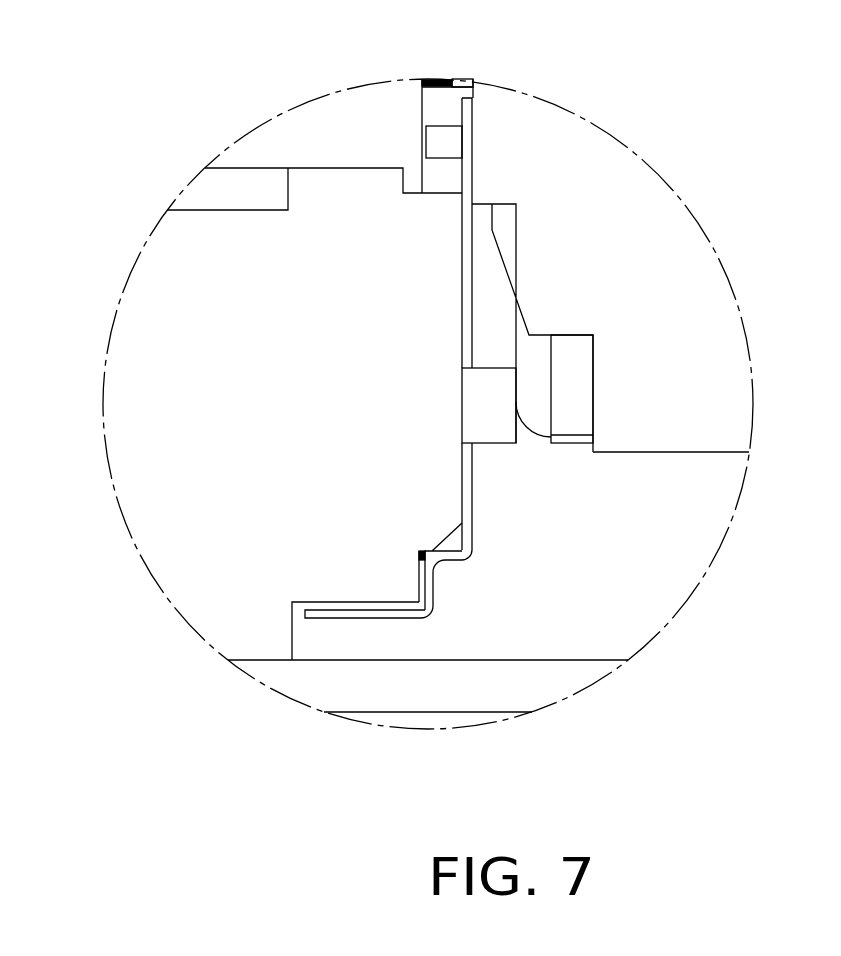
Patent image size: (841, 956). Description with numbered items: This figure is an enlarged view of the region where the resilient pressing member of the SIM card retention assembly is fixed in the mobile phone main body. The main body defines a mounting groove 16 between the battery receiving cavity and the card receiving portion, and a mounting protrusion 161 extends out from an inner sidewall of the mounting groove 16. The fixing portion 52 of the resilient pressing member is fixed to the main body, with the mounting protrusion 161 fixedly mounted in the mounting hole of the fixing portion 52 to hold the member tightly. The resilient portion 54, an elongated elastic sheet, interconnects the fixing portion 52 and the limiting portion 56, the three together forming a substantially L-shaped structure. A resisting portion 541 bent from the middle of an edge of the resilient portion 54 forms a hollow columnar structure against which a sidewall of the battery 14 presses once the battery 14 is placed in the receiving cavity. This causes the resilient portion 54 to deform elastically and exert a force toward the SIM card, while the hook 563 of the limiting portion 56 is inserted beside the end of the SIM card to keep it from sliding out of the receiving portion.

The battery 14 is at (537, 365).
The mounting groove 16 is at (438, 103).
The mounting protrusion 161 is at (438, 138).
The fixing portion 52 is at (467, 150).
The resilient portion 54 is at (465, 283).
The resisting portion 541 is at (493, 423).
The limiting portion 56 is at (437, 560).
The hook 563 is at (362, 613).